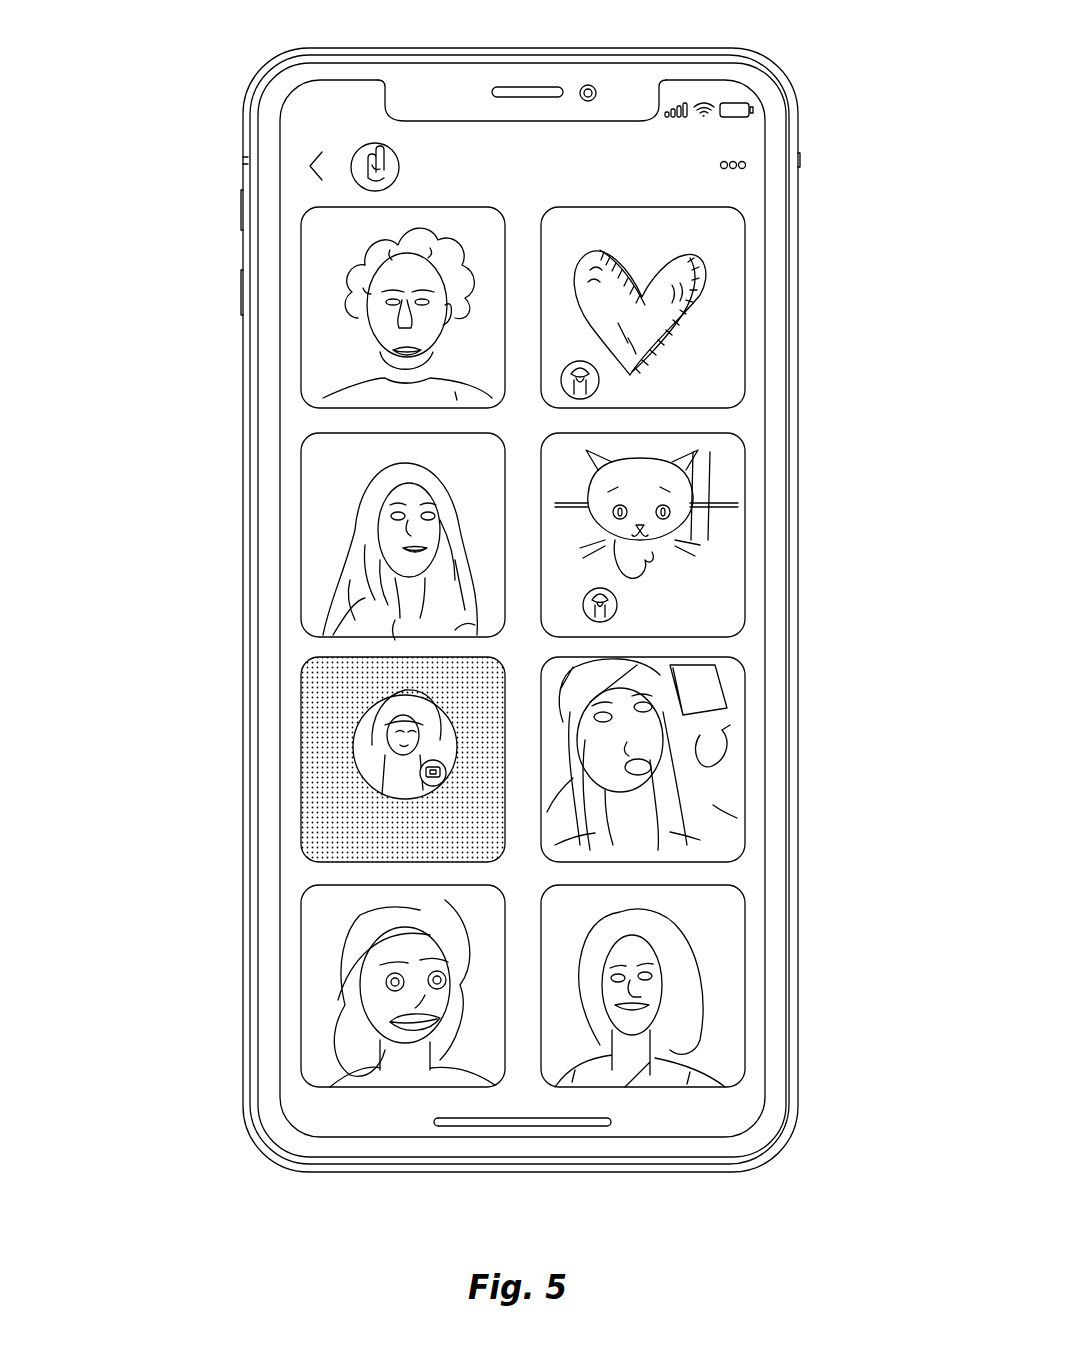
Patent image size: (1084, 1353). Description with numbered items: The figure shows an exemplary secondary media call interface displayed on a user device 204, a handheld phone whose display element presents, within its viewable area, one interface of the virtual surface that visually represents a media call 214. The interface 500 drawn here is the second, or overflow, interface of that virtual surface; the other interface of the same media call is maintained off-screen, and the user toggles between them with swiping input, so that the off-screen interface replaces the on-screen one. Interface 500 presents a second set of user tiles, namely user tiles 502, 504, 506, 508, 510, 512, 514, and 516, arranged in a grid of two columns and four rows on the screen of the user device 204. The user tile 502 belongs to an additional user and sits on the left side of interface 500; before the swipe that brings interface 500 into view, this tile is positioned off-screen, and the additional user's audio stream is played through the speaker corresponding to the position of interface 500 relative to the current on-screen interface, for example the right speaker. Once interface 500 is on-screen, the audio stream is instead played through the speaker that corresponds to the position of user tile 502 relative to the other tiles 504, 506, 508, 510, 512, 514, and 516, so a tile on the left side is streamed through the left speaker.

The user device 204 is at (240, 90).
The media call 214 is at (225, 287).
The interface 500 is at (283, 670).
The user tile 502 is at (327, 320).
The user tile 504 is at (327, 543).
The user tile 506 is at (322, 774).
The user tile 508 is at (325, 994).
The user tile 510 is at (716, 268).
The user tile 512 is at (712, 530).
The user tile 514 is at (710, 757).
The user tile 516 is at (714, 988).